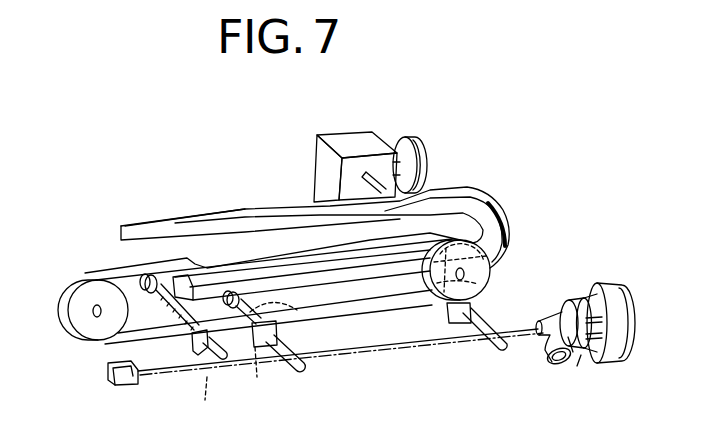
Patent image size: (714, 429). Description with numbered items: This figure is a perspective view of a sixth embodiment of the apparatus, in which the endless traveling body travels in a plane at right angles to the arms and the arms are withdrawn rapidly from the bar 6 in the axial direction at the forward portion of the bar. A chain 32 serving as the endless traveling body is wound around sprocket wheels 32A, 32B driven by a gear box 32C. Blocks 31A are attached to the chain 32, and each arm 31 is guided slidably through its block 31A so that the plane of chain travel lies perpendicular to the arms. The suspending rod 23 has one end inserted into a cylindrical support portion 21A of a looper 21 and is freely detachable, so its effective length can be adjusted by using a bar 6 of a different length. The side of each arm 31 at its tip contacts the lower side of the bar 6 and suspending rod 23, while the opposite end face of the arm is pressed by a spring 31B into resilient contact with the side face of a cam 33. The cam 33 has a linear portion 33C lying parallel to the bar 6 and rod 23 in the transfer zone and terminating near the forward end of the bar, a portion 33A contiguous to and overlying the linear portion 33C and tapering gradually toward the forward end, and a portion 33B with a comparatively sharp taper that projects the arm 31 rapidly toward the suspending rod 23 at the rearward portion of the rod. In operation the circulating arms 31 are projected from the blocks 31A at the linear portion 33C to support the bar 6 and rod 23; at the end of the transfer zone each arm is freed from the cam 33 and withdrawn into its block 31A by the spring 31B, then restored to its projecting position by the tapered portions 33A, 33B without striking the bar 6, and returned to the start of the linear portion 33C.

The bar 6 is at (212, 368).
The looper 21 is at (556, 307).
The cylindrical support portion 21A is at (542, 345).
The suspending rod 23 is at (440, 348).
The block 31A is at (256, 348).
The spring 31B is at (286, 320).
The arm 31 is at (278, 362).
The chain 32 is at (360, 313).
The sprocket wheel 32A is at (88, 306).
The sprocket wheel 32B is at (491, 270).
The gear box 32C is at (357, 146).
The cam 33 is at (465, 193).
The tapered portion 33A is at (265, 222).
The sharply tapered portion 33B is at (432, 302).
The linear portion 33C is at (298, 266).